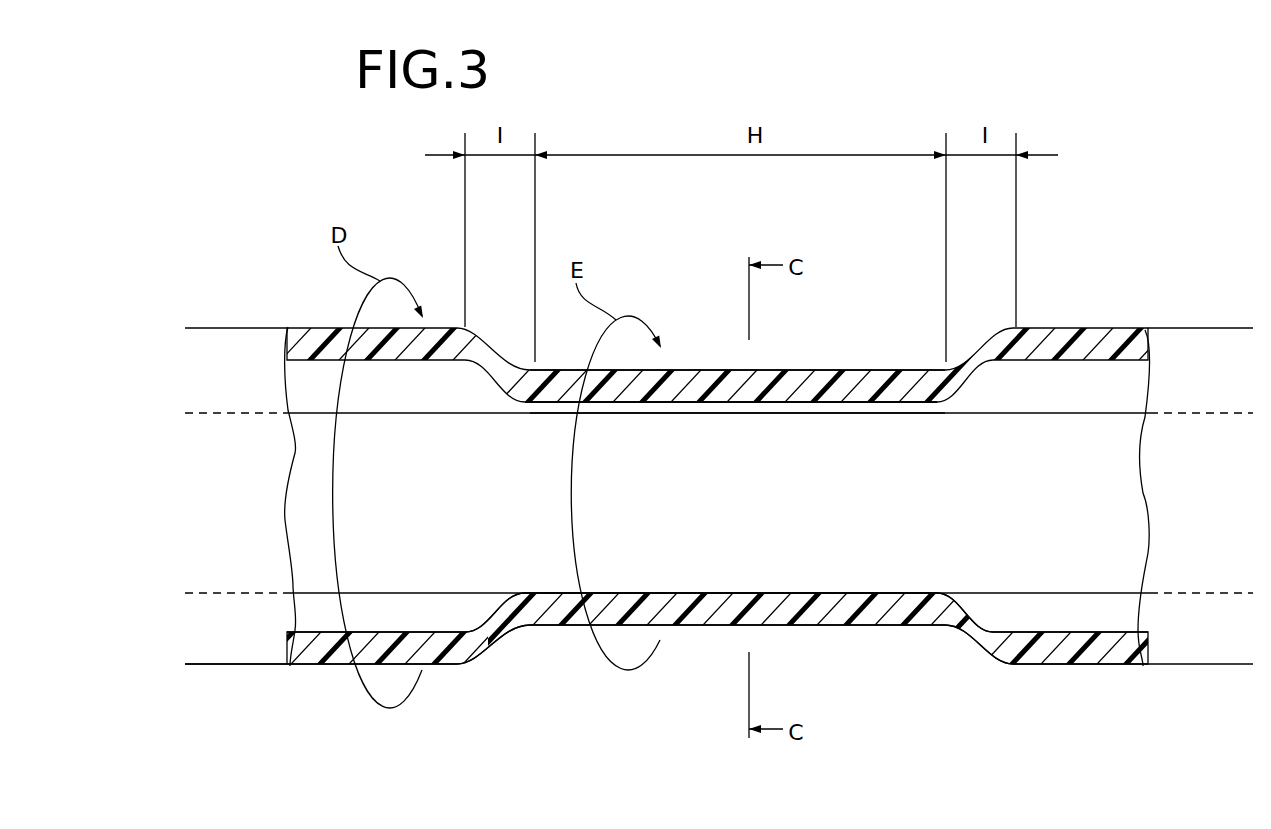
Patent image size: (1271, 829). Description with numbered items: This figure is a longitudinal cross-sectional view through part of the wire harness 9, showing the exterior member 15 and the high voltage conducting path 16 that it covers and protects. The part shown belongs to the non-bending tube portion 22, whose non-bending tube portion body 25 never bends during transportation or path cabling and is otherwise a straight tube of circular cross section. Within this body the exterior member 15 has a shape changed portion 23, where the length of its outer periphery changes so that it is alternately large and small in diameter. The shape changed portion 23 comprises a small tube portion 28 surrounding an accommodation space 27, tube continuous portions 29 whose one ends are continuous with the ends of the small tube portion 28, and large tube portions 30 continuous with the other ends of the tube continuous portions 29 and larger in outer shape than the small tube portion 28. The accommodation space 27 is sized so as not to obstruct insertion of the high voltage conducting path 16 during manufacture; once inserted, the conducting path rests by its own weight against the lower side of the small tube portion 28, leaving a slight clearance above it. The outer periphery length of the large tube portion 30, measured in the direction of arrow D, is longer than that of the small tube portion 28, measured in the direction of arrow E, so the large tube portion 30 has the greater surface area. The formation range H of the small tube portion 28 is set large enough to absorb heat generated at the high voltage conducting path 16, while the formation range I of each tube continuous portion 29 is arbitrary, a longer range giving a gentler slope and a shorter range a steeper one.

The wire harness 9 is at (1103, 227).
The exterior member 15 is at (1190, 328).
The high voltage conducting path 16 is at (1064, 408).
The non-bending tube portion 22 is at (1208, 655).
The shape changed portion 23 is at (838, 348).
The non-bending tube portion body 25 is at (252, 650).
The accommodation space 27 is at (863, 408).
The small tube portion 28 is at (822, 610).
The tube continuous portion 29 is at (505, 627).
The large tube portion 30 is at (457, 650).